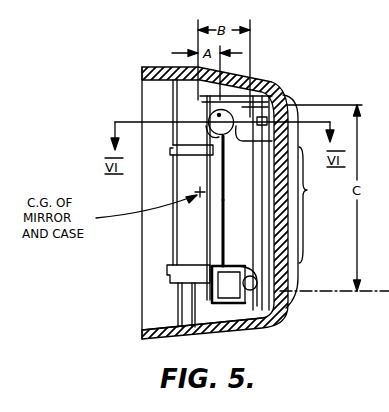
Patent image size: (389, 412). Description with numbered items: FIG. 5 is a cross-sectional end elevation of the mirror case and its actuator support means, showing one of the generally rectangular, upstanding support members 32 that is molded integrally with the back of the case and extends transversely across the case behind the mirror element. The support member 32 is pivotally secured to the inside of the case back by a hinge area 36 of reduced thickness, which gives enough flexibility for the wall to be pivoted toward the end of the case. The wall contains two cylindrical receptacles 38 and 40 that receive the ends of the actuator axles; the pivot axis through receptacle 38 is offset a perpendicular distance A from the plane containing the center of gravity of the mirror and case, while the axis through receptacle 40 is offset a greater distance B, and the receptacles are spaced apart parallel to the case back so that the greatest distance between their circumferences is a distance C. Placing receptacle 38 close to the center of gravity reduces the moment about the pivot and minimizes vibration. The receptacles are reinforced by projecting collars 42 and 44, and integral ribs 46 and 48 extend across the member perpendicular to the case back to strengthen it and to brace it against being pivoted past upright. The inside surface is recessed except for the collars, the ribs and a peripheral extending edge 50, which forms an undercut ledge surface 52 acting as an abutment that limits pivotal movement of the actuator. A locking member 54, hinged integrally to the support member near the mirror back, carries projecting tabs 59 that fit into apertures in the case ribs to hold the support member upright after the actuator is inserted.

The support member 32 is at (259, 82).
The hinge area 36 is at (306, 201).
The receptacle 38 is at (218, 114).
The receptacle 40 is at (262, 324).
The collar 42 is at (280, 128).
The collar 44 is at (258, 276).
The rib 46 is at (265, 133).
The rib 48 is at (236, 263).
The peripheral extending edge 50 is at (226, 188).
The ledge surface 52 is at (227, 223).
The locking member 54 is at (203, 246).
The tab 59 is at (170, 175).